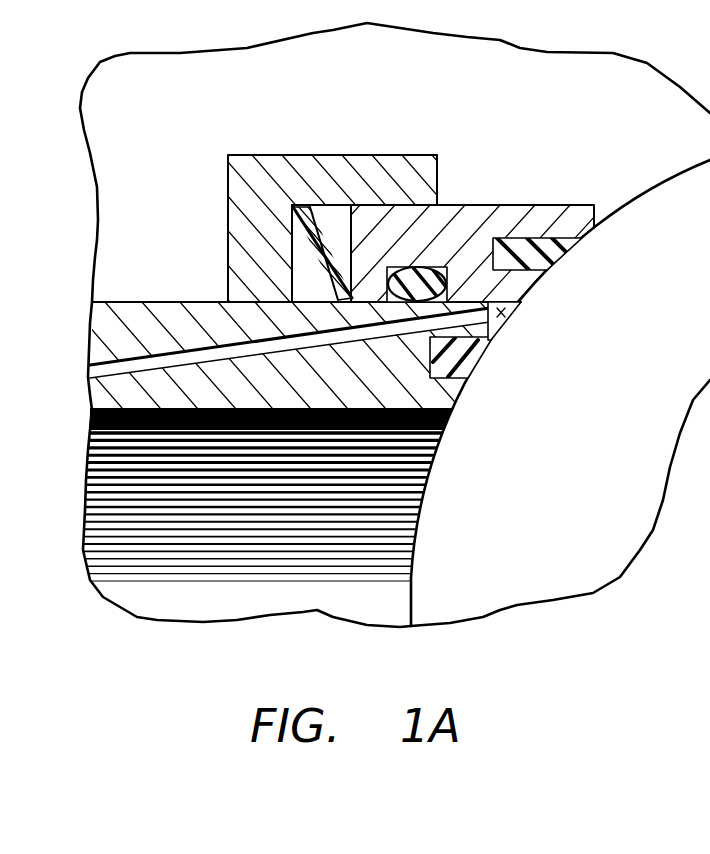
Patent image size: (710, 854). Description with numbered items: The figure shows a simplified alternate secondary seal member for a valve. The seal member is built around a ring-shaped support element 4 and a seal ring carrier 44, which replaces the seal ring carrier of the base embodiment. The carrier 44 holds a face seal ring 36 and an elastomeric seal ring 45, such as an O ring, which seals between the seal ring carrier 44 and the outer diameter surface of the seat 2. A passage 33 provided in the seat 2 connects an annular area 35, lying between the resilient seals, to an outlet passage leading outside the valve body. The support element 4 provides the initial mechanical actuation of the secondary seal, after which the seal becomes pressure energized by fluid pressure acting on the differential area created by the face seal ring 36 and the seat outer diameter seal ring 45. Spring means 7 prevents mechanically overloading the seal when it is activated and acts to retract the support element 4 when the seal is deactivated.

The seat 2 is at (175, 317).
The ring-shaped support element 4 is at (327, 153).
The spring means 7 is at (293, 247).
The passage 33 is at (138, 363).
The annular area 35 is at (502, 313).
The face seal ring 36 is at (553, 253).
The seal ring carrier 44 is at (530, 207).
The elastomeric seal ring 45 is at (430, 277).